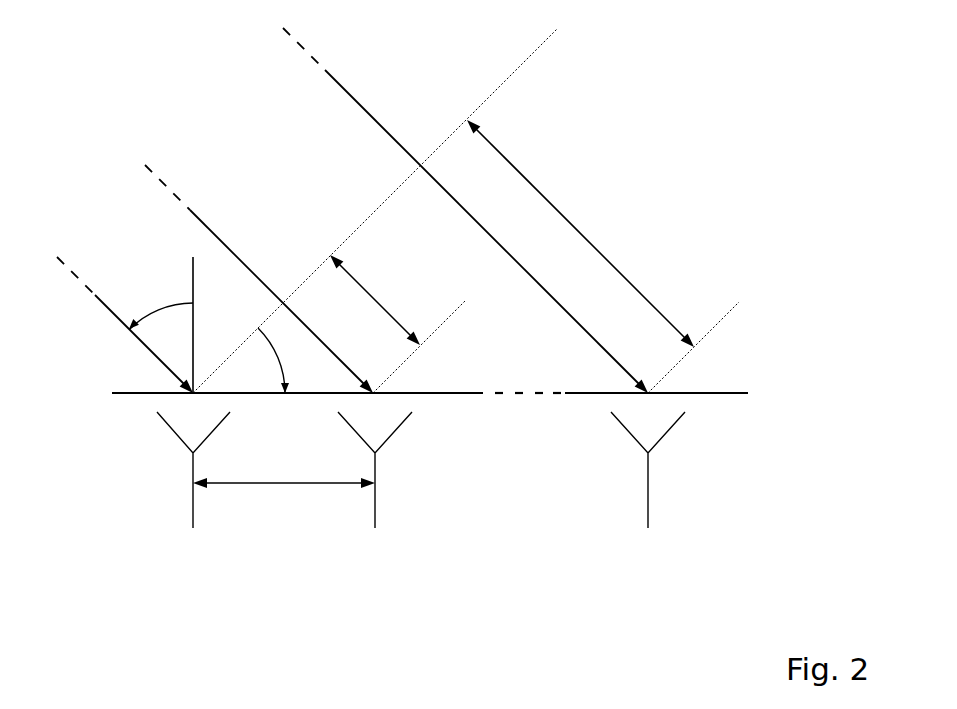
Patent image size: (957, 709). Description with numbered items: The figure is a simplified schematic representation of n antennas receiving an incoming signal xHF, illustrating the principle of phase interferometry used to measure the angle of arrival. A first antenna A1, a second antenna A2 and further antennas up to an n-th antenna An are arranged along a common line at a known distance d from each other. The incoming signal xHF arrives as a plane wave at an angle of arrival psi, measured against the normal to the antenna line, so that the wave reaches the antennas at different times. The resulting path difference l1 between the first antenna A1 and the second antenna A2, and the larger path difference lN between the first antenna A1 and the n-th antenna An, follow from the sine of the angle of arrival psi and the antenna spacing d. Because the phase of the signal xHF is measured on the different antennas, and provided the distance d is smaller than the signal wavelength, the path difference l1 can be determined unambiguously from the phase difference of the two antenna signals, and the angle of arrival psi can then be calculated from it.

The first antenna A1 is at (193, 498).
The second antenna A2 is at (375, 498).
The n-th antenna An is at (648, 498).
The incoming signal xHF is at (352, 210).
The path difference l1 is at (375, 300).
The path difference to the n-th antenna lN is at (580, 233).
The angle of arrival psi is at (209, 351).
The distance between two antennas d is at (284, 505).